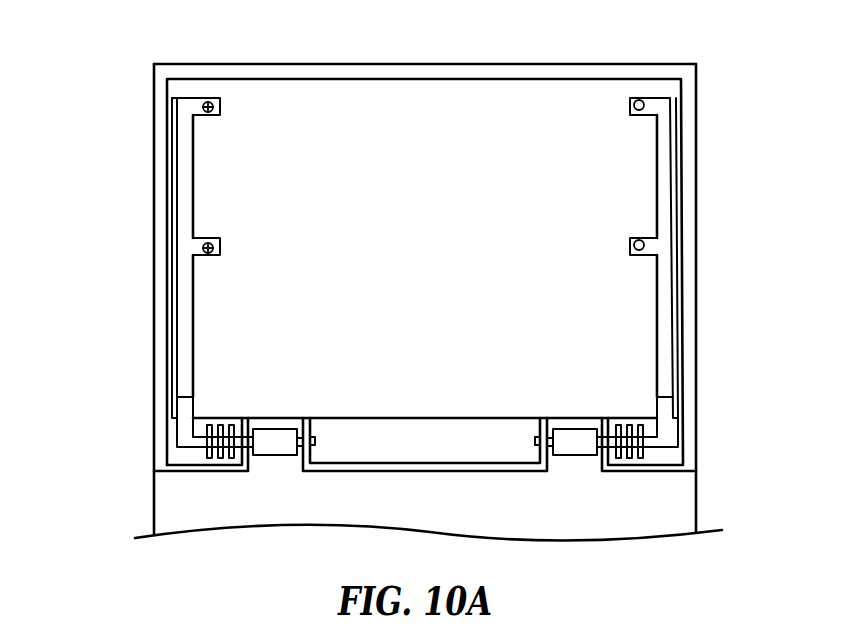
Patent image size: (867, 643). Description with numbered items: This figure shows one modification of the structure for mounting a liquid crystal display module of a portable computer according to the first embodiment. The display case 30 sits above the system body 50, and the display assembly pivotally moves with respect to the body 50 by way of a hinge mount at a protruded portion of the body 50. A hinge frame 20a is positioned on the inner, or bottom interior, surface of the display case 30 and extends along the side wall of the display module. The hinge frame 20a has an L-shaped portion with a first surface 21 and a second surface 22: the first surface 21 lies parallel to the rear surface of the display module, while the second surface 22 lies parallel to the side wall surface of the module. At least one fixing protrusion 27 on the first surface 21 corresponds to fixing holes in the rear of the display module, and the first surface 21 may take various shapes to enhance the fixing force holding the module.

The hinge frame 20a is at (349, 272).
The first surface 21 is at (185, 215).
The second surface 22 is at (177, 162).
The fixing protrusion 27 is at (644, 105).
The display case 30 is at (492, 110).
The system body 50 is at (154, 502).